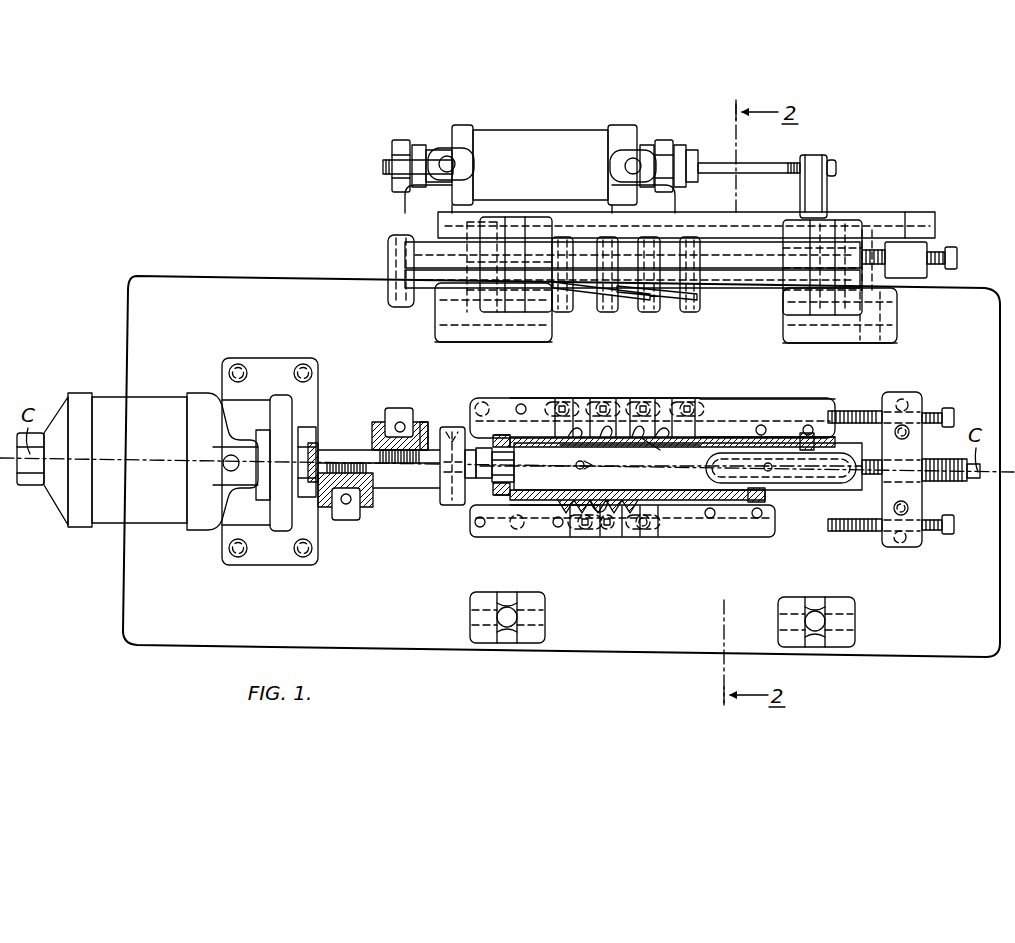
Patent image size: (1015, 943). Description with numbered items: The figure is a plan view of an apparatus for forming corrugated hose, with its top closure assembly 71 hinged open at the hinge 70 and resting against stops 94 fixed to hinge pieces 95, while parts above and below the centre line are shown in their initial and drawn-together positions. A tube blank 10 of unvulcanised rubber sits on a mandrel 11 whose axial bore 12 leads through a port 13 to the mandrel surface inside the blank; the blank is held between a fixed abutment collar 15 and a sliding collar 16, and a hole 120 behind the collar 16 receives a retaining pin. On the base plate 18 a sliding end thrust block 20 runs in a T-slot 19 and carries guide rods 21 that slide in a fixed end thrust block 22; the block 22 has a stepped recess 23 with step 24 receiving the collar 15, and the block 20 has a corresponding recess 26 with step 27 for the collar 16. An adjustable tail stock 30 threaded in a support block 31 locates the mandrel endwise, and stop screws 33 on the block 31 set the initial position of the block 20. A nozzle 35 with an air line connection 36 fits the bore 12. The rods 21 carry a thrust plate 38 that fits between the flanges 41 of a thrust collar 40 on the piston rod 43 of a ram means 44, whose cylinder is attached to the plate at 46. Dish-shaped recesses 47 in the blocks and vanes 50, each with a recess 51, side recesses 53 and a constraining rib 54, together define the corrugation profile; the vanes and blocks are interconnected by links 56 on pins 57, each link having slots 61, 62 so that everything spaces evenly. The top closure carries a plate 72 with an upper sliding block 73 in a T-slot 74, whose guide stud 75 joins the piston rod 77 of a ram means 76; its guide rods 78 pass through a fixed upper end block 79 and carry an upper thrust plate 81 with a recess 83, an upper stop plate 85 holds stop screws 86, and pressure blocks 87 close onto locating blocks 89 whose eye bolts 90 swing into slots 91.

The tube blank 10 is at (535, 436).
The mandrel 11 is at (682, 500).
The axial bore 12 is at (522, 504).
The port 13 is at (580, 466).
The fixed abutment collar 15 is at (498, 434).
The further abutment collar 16 is at (806, 423).
The base plate 18 is at (626, 626).
The T-slot 19 is at (822, 481).
The sliding end thrust block 20 is at (763, 407).
The guide rods 21 is at (424, 422).
The end thrust block 22 is at (516, 403).
The semi-cylindrical recess 23 is at (520, 494).
The step 24 is at (490, 433).
The semi-cylindrical recess 26 is at (734, 438).
The step 27 is at (816, 441).
The adjustable tail stock 30 is at (942, 476).
The support block 31 is at (918, 546).
The stop screws 33 is at (852, 411).
The nozzle 35 is at (466, 452).
The air line connection 36 is at (451, 427).
The thrust plate 38 is at (396, 408).
The thrust collar 40 is at (368, 437).
The flanges 41 is at (380, 422).
The piston rod 43 is at (370, 458).
The ram means 44 is at (153, 422).
The cylinder attachment 46 is at (237, 363).
The dish-shaped recesses 47 is at (582, 421).
The vanes 50 is at (620, 427).
The semi-cylindrical recess 51 is at (614, 446).
The dish-shaped recesses 53 is at (634, 440).
The constraining rib 54 is at (662, 437).
The links 56 is at (546, 423).
The pins 57 is at (650, 304).
The slot 61 is at (626, 421).
The slot 62 is at (590, 540).
The hinge 70 is at (450, 313).
The top closure assembly 71 is at (855, 212).
The plate 72 is at (917, 225).
The upper sliding block 73 is at (700, 239).
The T-slot 74 is at (870, 218).
The guide stud 75 is at (827, 191).
The ram means 76 is at (553, 150).
The piston rod 77 is at (743, 170).
The guide rods 78 is at (414, 237).
The fixed upper end block 79 is at (570, 234).
The upper thrust plate 81 is at (394, 275).
The semi-cylindrical recess 83 is at (390, 297).
The upper stop plate 85 is at (906, 277).
The stop screws 86 is at (944, 256).
The pressure blocks 87 is at (540, 234).
The locating blocks 89 is at (477, 600).
The eye bolts 90 is at (506, 610).
The slots 91 is at (512, 220).
The stops 94 is at (497, 222).
The hinge pieces 95 is at (480, 337).
The hole 120 is at (770, 472).